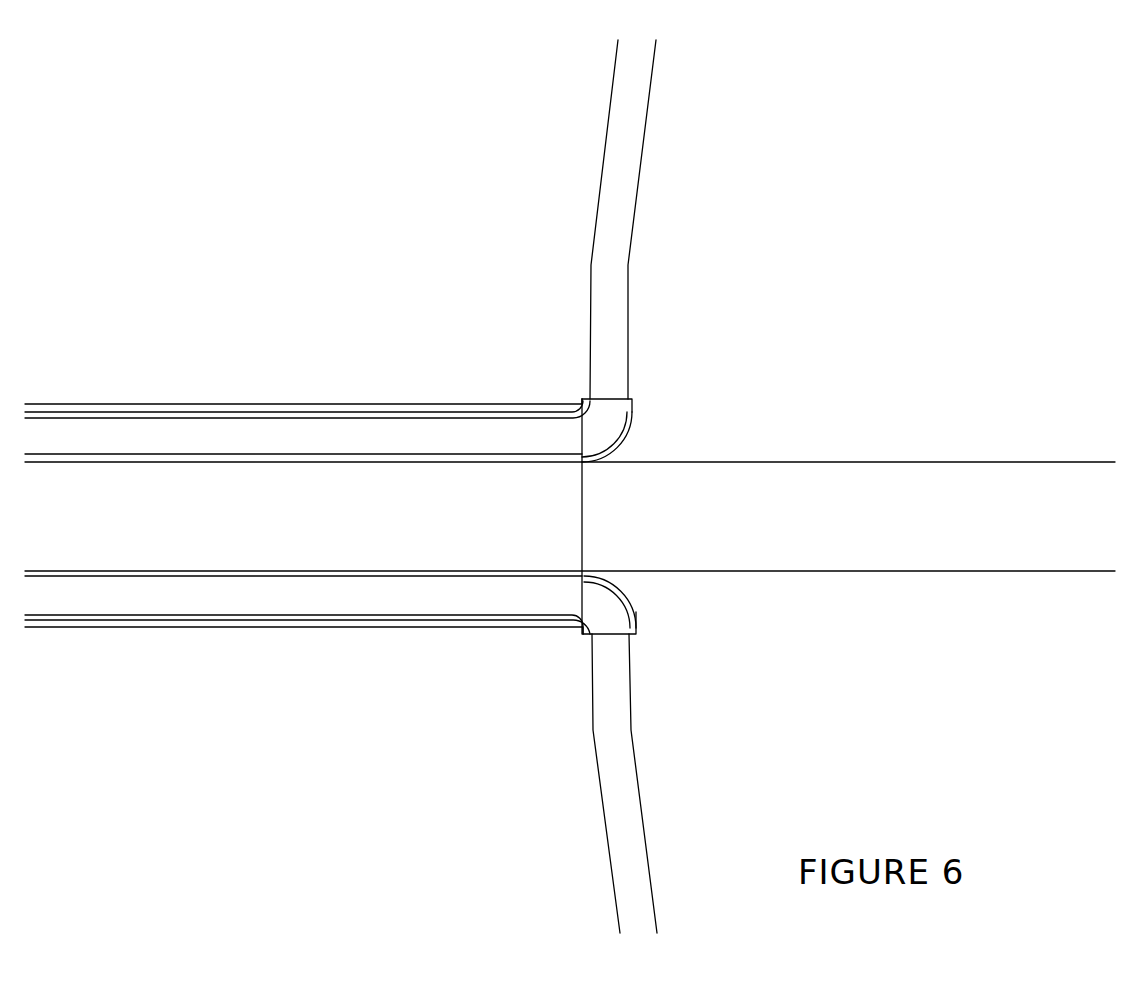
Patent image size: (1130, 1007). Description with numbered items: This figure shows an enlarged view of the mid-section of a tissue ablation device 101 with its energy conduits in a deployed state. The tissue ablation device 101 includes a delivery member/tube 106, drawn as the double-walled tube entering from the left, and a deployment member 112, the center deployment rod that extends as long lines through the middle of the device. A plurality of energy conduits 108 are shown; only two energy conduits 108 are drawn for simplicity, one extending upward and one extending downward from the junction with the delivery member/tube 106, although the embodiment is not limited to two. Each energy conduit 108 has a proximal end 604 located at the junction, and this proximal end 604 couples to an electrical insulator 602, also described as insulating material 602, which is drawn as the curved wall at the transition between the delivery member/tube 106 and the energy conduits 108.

The tissue ablation device 101 is at (446, 255).
The delivery member/tube 106 is at (198, 388).
The energy conduits 108 is at (590, 293).
The deployment member 112 is at (773, 455).
The electrical insulator 602 is at (629, 417).
The proximal end 604 is at (637, 375).